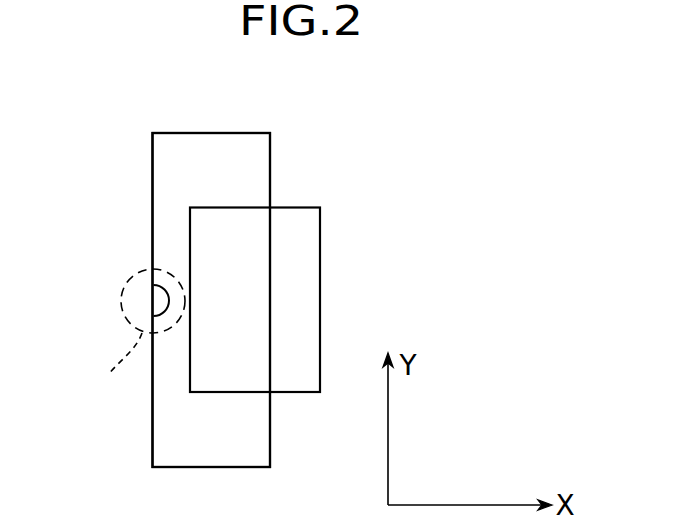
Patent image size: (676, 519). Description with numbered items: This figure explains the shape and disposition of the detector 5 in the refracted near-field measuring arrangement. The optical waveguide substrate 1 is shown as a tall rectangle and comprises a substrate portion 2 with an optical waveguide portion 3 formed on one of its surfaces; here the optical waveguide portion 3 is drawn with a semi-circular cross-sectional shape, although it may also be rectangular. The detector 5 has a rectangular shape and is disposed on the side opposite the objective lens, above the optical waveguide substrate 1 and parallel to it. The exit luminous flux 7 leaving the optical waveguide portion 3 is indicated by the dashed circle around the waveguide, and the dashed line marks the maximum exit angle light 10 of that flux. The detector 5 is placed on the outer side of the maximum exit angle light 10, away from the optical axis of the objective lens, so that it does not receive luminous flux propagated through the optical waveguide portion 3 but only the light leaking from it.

The optical waveguide substrate 1 is at (282, 153).
The substrate portion 2 is at (160, 170).
The optical waveguide portion 3 is at (147, 272).
The detector 5 is at (310, 322).
The exit luminous flux 7 is at (127, 298).
The maximum exit angle light 10 is at (116, 375).